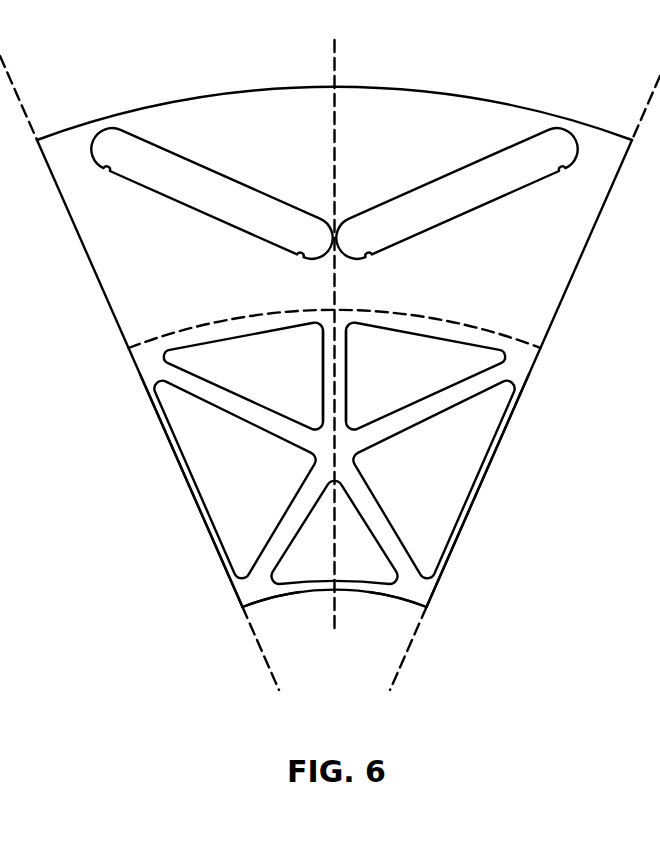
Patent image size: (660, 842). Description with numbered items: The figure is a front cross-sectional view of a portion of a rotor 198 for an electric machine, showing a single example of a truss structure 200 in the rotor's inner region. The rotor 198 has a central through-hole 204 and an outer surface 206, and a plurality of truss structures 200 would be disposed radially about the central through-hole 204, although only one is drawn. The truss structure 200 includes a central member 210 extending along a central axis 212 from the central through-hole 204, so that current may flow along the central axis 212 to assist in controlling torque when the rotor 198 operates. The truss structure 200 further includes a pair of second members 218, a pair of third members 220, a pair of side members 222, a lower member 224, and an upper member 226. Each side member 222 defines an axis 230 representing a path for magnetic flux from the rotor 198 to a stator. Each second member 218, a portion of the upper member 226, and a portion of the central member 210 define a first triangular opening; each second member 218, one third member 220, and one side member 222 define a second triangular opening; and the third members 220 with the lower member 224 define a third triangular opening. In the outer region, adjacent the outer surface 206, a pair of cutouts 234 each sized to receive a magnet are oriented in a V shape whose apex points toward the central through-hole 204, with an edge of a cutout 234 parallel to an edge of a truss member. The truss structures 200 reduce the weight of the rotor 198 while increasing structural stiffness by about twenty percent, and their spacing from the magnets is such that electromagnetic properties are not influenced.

The rotor 198 is at (375, 86).
The truss structure 200 is at (338, 472).
The central through-hole 204 is at (356, 597).
The outer surface 206 is at (185, 98).
The central member 210 is at (338, 365).
The central axis 212 is at (330, 50).
The second member 218 is at (210, 393).
The third member 220 is at (288, 525).
The side member 222 is at (163, 431).
The lower member 224 is at (300, 590).
The upper member 226 is at (272, 320).
The axis 230 is at (8, 80).
The cutout 234 is at (203, 160).